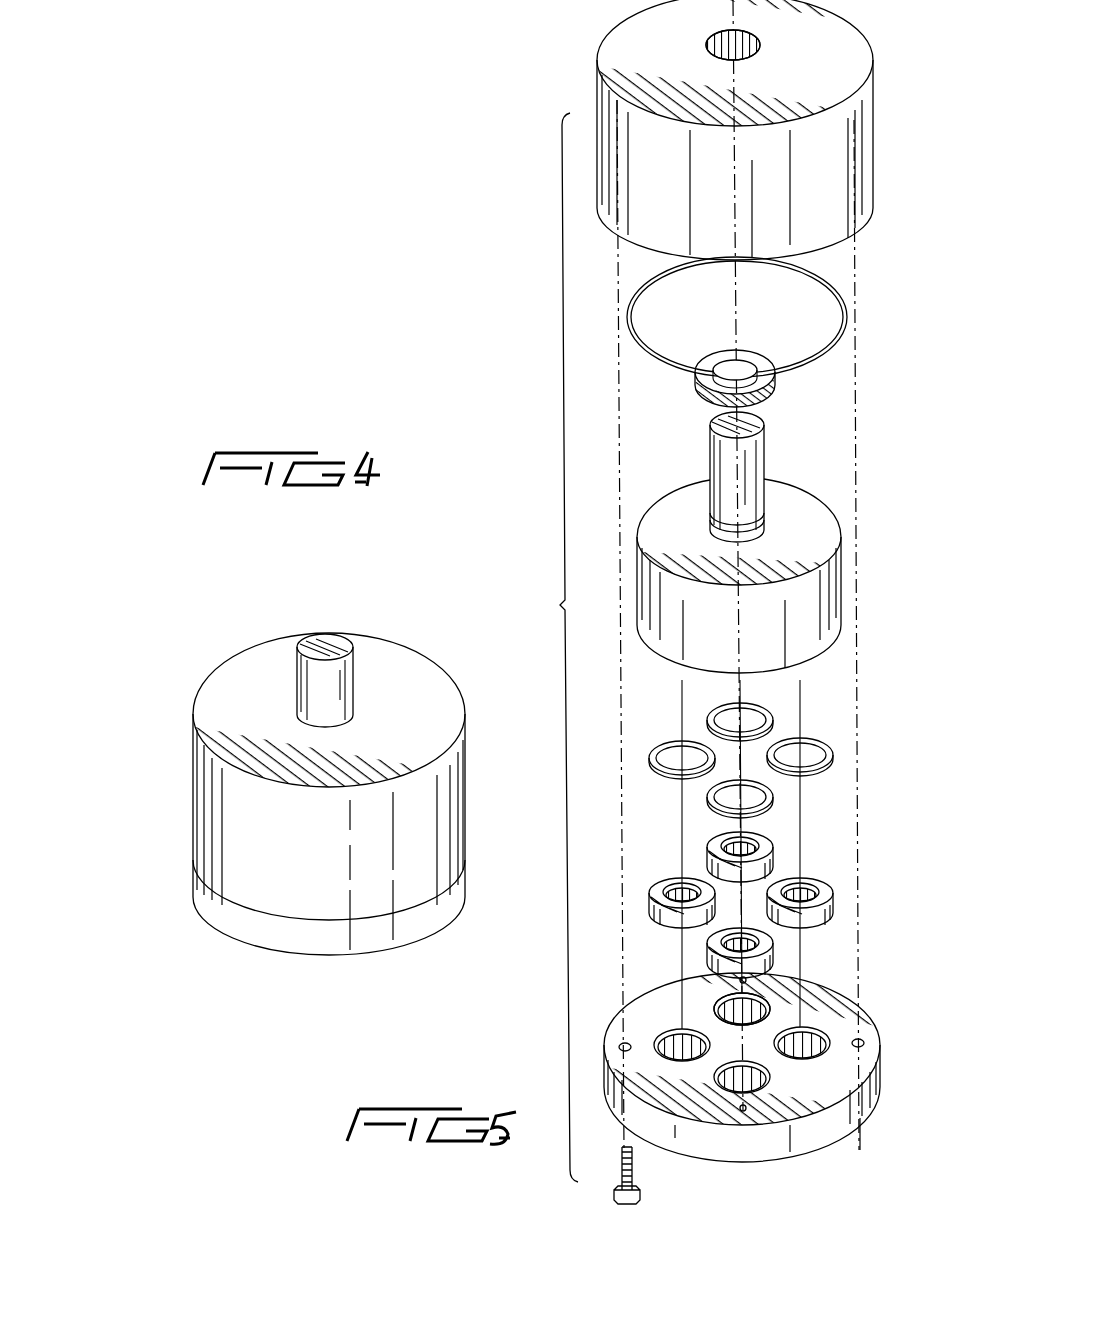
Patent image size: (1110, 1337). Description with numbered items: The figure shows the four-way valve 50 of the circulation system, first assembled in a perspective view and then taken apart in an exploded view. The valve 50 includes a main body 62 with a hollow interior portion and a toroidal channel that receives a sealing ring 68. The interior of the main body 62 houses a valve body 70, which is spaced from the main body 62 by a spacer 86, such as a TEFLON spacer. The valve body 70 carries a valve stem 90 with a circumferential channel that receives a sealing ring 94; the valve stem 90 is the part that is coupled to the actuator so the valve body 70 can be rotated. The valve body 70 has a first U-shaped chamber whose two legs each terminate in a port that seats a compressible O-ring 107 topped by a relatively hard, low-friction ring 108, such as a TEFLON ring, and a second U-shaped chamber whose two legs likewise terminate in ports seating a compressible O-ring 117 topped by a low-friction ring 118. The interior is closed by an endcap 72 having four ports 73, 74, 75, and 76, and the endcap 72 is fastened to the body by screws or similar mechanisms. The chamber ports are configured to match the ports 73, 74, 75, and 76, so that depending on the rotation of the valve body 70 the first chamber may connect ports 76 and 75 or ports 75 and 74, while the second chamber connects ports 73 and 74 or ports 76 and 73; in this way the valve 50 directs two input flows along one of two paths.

In FIG. 4, the valve 50 is at (137, 796).
In FIG. 5, the valve 50 is at (550, 647).
In FIG. 4, the main body 62 is at (302, 856).
In FIG. 5, the main body 62 is at (702, 200).
In FIG. 4, the endcap 72 is at (287, 933).
In FIG. 4, the valve stem 90 is at (353, 672).
In FIG. 5, the valve stem 90 is at (762, 456).
In FIG. 5, the sealing ring 68 is at (637, 350).
In FIG. 5, the spacer 86 is at (773, 382).
In FIG. 5, the sealing ring 94 is at (766, 505).
In FIG. 5, the valve body 70 is at (745, 650).
In FIG. 5, the compressible O-ring 117 is at (820, 740).
In FIG. 5, the compressible O-ring 107 is at (710, 812).
In FIG. 5, the low-friction ring 118 is at (824, 872).
In FIG. 5, the low-friction ring 108 is at (707, 957).
In FIG. 5, the port 76 is at (660, 1033).
In FIG. 5, the port 73 is at (774, 988).
In FIG. 5, the port 74 is at (827, 1031).
In FIG. 5, the port 75 is at (765, 1120).